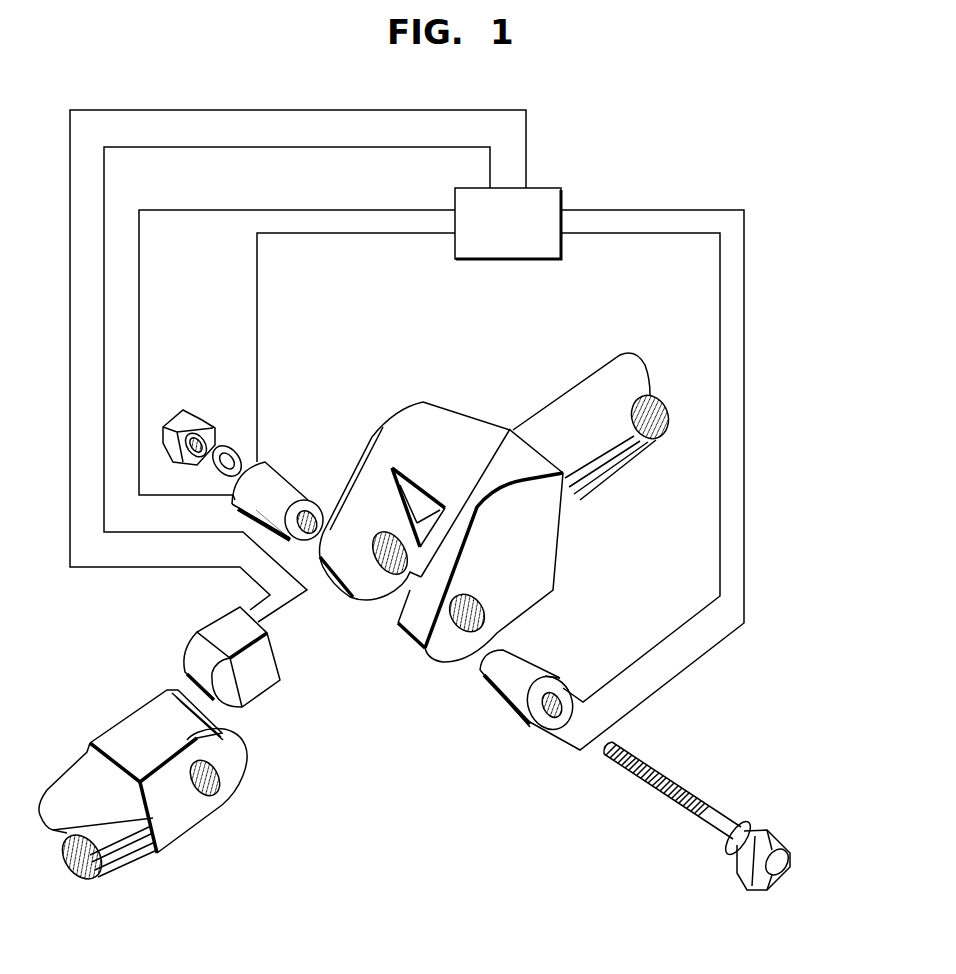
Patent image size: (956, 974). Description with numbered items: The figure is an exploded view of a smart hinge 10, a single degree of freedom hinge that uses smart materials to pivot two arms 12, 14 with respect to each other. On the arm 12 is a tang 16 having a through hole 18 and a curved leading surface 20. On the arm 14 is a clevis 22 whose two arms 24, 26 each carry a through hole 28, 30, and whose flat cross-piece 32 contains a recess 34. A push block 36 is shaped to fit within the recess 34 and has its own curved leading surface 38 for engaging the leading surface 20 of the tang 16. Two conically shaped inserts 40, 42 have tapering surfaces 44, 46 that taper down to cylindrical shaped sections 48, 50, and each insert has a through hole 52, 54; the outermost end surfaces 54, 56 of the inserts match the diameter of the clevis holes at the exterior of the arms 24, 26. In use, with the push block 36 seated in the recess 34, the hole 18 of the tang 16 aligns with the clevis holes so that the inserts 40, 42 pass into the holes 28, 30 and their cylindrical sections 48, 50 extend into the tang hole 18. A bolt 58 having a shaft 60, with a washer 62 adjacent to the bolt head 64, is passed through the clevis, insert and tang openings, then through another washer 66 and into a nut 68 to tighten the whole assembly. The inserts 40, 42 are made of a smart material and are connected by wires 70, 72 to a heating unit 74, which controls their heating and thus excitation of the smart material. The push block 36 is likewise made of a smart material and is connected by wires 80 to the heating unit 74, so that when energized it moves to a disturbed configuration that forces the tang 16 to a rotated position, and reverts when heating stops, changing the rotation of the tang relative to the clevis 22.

The smart hinge 10 is at (748, 655).
The arm 12 is at (123, 852).
The arm 14 is at (570, 398).
The tang 16 is at (148, 768).
The through hole 18 is at (207, 780).
The curved leading surface 20 is at (167, 698).
The clevis 22 is at (500, 538).
The clevis arm 24 is at (357, 480).
The clevis arm 26 is at (433, 653).
The through hole 28 is at (383, 567).
The through hole 30 is at (467, 622).
The flat cross-piece 32 is at (437, 507).
The recess 34 is at (413, 503).
The push block 36 is at (200, 678).
The curved leading surface 38 is at (193, 647).
The conically shaped insert 40 is at (562, 709).
The conically shaped insert 42 is at (243, 475).
The tapering surface 44 is at (530, 663).
The tapering surface 46 is at (247, 515).
The cylindrical shaped section 48 is at (490, 675).
The cylindrical shaped section 50 is at (312, 510).
The through hole 52 is at (553, 708).
The through hole 54 is at (287, 535).
The outermost end surface 56 is at (233, 488).
The bolt 58 is at (728, 828).
The shaft 60 is at (657, 797).
The washer 62 is at (723, 850).
The bolt head 64 is at (767, 840).
The washer 66 is at (232, 444).
The nut 68 is at (180, 417).
The wires 70 is at (744, 352).
The wires 72 is at (361, 232).
The heating unit 74 is at (548, 188).
The wires 80 is at (205, 147).